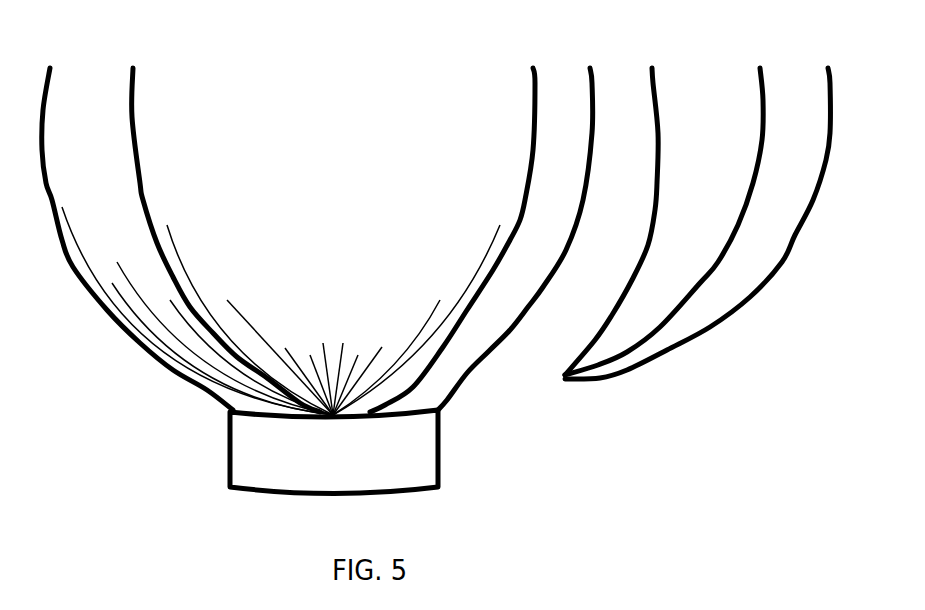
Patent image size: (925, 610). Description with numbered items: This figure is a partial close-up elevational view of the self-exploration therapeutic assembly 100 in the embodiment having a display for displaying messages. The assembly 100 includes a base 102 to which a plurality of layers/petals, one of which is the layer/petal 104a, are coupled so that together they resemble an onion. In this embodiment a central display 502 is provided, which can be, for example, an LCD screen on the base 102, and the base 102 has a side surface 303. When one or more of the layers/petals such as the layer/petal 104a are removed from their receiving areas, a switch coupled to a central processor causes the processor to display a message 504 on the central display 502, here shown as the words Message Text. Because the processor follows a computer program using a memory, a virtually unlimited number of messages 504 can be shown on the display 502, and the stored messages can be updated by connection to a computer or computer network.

The self-exploration therapeutic assembly 100 is at (398, 537).
The base 102 is at (440, 455).
The layer/petal 104a is at (605, 343).
The side surface 303 is at (272, 488).
The central display 502 is at (250, 428).
The message 504 is at (230, 457).